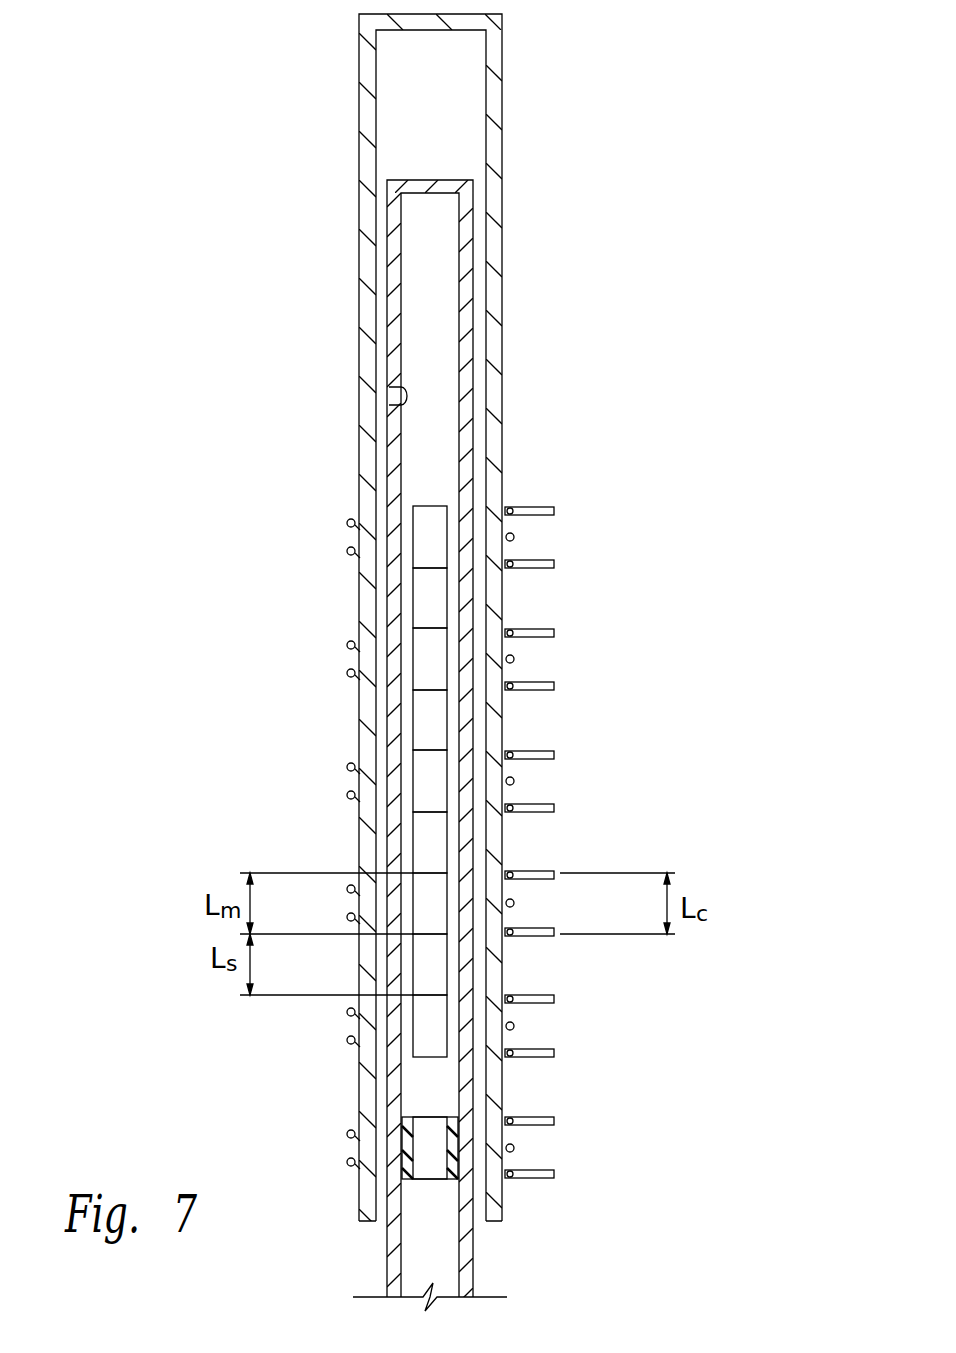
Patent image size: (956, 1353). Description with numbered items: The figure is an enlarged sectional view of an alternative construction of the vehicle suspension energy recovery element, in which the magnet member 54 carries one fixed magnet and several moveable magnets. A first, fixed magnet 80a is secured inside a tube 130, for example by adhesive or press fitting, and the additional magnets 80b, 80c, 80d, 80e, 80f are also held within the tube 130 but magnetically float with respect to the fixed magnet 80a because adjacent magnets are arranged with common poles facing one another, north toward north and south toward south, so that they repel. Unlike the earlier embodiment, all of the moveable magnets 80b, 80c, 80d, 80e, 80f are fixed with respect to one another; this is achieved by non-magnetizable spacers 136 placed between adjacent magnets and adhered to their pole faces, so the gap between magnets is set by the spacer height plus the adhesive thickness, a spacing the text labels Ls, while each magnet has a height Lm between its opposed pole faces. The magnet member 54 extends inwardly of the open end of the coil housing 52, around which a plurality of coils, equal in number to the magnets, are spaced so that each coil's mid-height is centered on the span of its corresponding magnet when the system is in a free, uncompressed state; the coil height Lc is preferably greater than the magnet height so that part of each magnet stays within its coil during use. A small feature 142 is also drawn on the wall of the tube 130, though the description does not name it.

The coil housing 52 is at (503, 297).
The magnet member 54 is at (473, 1262).
The tube 130 is at (465, 1084).
The non-magnetizable spacer 136 is at (430, 722).
The notch 142 is at (397, 397).
The fixed magnet 80a is at (413, 1148).
The moveable magnet 80b is at (417, 1026).
The moveable magnet 80c is at (417, 903).
The moveable magnet 80d is at (417, 781).
The moveable magnet 80e is at (417, 659).
The moveable magnet 80f is at (417, 537).